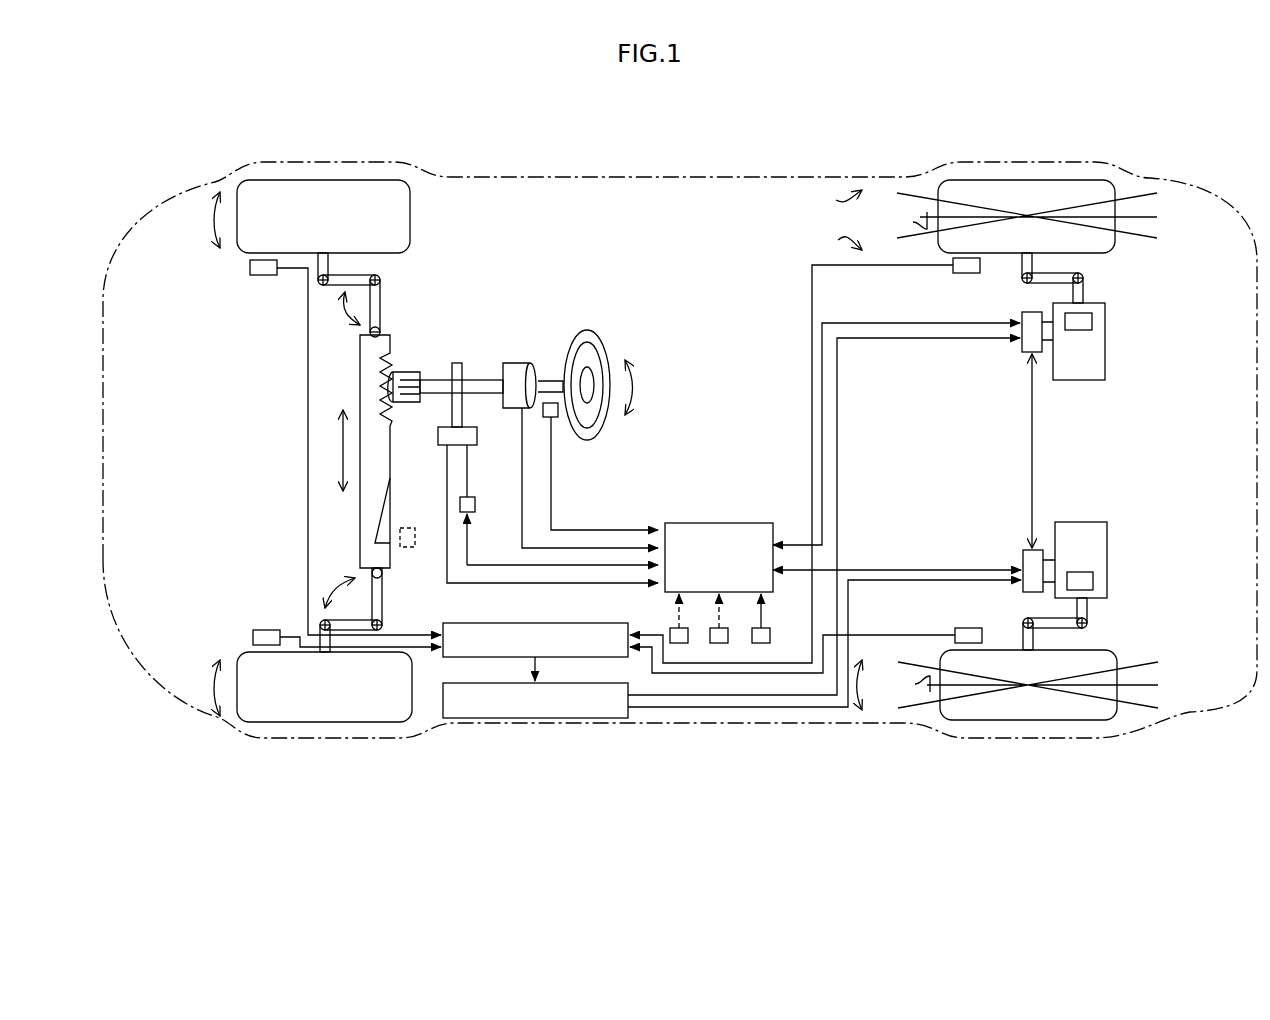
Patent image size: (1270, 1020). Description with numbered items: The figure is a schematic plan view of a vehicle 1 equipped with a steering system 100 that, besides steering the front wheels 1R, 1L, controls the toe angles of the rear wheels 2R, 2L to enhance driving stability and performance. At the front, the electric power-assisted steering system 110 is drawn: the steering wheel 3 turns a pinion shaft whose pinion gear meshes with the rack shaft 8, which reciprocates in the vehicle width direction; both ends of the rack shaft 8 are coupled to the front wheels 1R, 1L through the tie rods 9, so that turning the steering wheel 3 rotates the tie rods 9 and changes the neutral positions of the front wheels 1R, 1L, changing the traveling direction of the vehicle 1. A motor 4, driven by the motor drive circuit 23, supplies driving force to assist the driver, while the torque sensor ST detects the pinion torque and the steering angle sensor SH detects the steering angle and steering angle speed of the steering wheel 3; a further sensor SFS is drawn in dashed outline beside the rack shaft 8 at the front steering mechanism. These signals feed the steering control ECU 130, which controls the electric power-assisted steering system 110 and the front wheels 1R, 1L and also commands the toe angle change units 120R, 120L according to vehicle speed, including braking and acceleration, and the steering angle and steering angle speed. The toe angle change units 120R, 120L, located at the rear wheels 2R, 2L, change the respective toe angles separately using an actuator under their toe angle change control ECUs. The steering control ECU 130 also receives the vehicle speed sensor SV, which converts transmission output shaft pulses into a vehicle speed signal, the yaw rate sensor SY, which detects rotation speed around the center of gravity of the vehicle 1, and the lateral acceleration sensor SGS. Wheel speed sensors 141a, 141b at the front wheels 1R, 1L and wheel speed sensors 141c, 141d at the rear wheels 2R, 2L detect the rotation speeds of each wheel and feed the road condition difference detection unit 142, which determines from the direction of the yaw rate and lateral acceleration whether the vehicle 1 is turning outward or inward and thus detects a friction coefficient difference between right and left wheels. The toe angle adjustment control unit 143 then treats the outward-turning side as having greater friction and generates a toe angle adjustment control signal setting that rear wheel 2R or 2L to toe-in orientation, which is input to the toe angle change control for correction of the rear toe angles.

The vehicle 1 is at (565, 170).
The steering system 100 is at (765, 165).
The front right wheel 1R is at (337, 180).
The front left wheel 1L is at (285, 722).
The rear right wheel 2R is at (1055, 180).
The rear left wheel 2L is at (1055, 720).
The steering wheel 3 is at (602, 357).
The motor 4 is at (438, 440).
The rack shaft 8 is at (362, 390).
The tie rod 9 is at (378, 310).
The motor drive circuit 23 is at (476, 506).
The electric power-assisted steering system 110 is at (493, 405).
The toe angle change unit 120R is at (1056, 400).
The toe angle change unit 120L is at (1066, 555).
The steering control ECU 130 is at (748, 515).
The wheel speed sensor 141a is at (262, 276).
The wheel speed sensor 141b is at (265, 630).
The wheel speed sensor 141c is at (960, 274).
The wheel speed sensor 141d is at (968, 628).
The road condition difference detection unit 142 is at (463, 658).
The toe angle adjustment control unit 143 is at (553, 720).
The torque sensor ST is at (522, 363).
The steering angle sensor SH is at (551, 420).
The front wheel steering angle sensor SFS is at (408, 547).
The lateral acceleration sensor SGS is at (680, 643).
The yaw rate sensor SY is at (719, 643).
The vehicle speed sensor SV is at (761, 643).